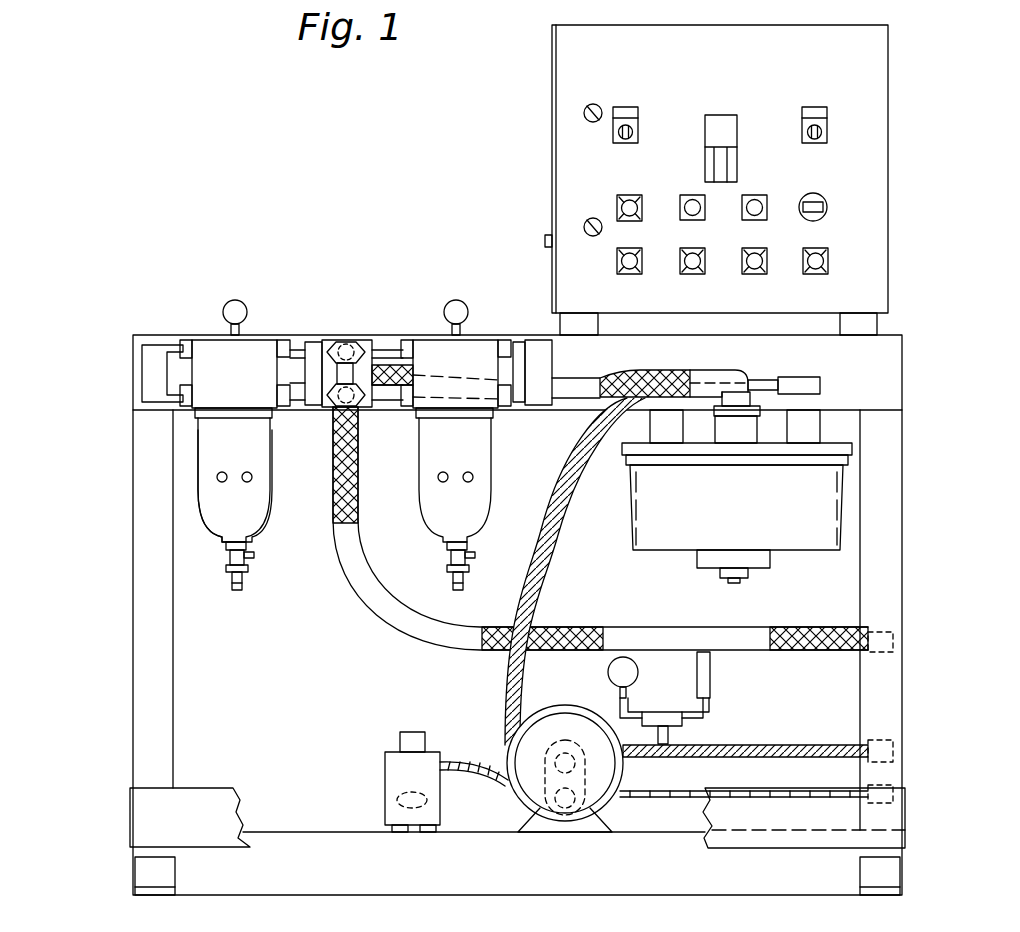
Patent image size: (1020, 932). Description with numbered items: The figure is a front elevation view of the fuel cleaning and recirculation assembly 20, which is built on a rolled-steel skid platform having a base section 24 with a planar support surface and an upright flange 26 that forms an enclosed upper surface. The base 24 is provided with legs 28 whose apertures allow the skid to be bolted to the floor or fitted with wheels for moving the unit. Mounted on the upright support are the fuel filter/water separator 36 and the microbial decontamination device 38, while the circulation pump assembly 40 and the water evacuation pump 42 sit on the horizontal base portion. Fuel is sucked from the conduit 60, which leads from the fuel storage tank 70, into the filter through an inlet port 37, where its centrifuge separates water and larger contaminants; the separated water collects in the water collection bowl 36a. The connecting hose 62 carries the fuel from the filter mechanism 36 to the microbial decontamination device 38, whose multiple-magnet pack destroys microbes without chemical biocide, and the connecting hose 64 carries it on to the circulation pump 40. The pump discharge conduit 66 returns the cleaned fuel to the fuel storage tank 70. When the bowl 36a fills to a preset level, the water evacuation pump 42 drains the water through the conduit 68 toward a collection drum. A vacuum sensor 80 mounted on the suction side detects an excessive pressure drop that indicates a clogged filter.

The fuel cleaning and recirculation assembly 20 is at (112, 713).
The base section 24 is at (502, 877).
The upright flange 26 is at (143, 803).
The legs 28 is at (138, 870).
The fuel filter/water separator 36 is at (205, 455).
The water collection bowl 36a is at (262, 515).
The inlet port 37 is at (330, 348).
The microbial decontamination device 38 is at (721, 511).
The circulation pump assembly 40 is at (520, 745).
The water evacuation pump 42 is at (385, 765).
The conduit 60 is at (363, 598).
The connecting hose 62 is at (567, 378).
The connecting hose 64 is at (540, 560).
The pump discharge conduit 66 is at (778, 742).
The conduit 68 is at (656, 798).
The fuel storage tank 70 is at (712, 680).
The vacuum sensor 80 is at (800, 385).